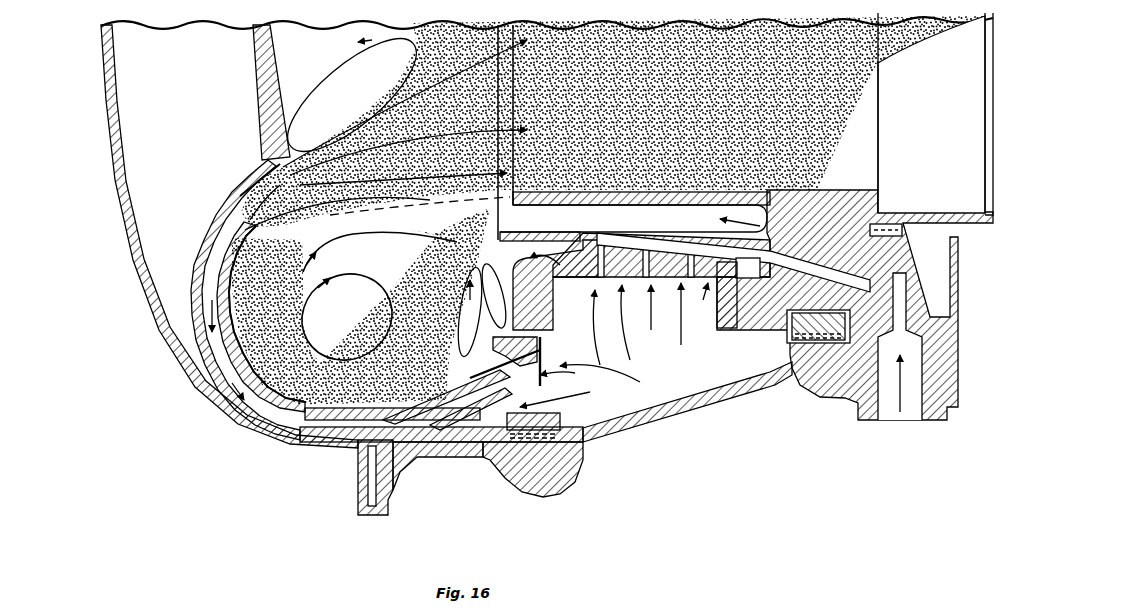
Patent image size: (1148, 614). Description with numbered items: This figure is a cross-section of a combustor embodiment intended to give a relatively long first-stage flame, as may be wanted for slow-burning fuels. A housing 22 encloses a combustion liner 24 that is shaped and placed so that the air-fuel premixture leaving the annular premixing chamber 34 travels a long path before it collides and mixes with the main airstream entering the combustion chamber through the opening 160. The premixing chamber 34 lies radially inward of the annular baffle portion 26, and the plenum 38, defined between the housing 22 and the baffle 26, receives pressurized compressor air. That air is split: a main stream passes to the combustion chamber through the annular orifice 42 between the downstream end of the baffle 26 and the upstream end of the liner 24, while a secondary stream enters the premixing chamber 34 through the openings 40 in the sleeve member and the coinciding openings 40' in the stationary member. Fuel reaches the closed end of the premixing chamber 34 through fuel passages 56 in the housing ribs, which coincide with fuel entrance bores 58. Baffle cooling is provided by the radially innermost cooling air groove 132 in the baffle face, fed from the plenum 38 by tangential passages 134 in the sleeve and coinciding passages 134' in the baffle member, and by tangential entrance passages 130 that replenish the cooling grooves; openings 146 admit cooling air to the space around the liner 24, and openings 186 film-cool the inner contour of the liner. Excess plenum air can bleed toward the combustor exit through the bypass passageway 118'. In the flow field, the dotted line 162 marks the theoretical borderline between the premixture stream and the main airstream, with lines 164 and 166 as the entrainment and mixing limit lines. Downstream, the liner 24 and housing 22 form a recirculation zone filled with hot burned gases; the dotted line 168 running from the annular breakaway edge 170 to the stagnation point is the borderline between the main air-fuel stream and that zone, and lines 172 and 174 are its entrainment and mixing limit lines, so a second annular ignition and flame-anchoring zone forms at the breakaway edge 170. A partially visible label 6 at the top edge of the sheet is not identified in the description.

The combustor 6 is at (445, 25).
The housing 22 is at (320, 448).
The combustion liner 24 is at (207, 322).
The annular baffle portion 26 is at (713, 295).
The annular air-fuel premixing chamber 34 is at (635, 212).
The plenum 38 is at (687, 402).
The openings 40 is at (646, 302).
The openings in stationary member 40' is at (733, 253).
The annular orifice 42 is at (488, 400).
The fuel passages 56 is at (888, 412).
The fuel entrance bores 58 is at (813, 190).
The bypass air passageway 118' is at (785, 330).
The tangential entrance passages 130 is at (558, 333).
The radially innermost cooling air groove 132 is at (582, 234).
The tangentially arranged passages 134 is at (527, 302).
The coinciding passages 134' is at (661, 239).
The circumferentially spaced openings 146 is at (457, 410).
The opening 160 is at (222, 224).
The dotted borderline 162 is at (240, 194).
The entrainment and mixing limit line 164 is at (257, 163).
The entrainment and mixing limit line 166 is at (297, 222).
The dotted borderline 168 is at (366, 114).
The annular breakaway edge 170 is at (297, 160).
The entrainment and mixing limit line 172 is at (370, 100).
The entrainment and mixing limit line 174 is at (420, 206).
The openings 186 is at (257, 430).